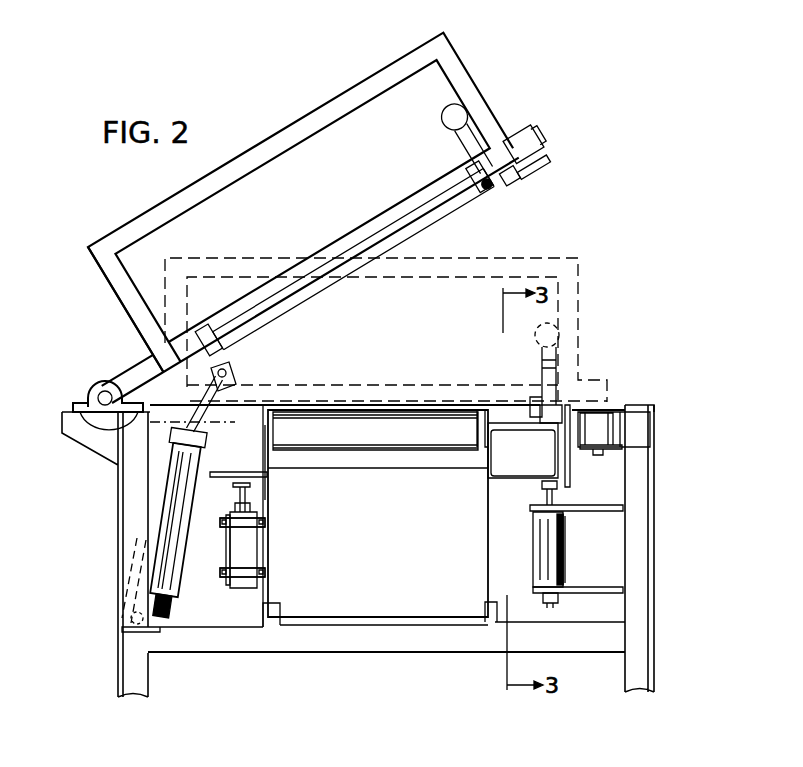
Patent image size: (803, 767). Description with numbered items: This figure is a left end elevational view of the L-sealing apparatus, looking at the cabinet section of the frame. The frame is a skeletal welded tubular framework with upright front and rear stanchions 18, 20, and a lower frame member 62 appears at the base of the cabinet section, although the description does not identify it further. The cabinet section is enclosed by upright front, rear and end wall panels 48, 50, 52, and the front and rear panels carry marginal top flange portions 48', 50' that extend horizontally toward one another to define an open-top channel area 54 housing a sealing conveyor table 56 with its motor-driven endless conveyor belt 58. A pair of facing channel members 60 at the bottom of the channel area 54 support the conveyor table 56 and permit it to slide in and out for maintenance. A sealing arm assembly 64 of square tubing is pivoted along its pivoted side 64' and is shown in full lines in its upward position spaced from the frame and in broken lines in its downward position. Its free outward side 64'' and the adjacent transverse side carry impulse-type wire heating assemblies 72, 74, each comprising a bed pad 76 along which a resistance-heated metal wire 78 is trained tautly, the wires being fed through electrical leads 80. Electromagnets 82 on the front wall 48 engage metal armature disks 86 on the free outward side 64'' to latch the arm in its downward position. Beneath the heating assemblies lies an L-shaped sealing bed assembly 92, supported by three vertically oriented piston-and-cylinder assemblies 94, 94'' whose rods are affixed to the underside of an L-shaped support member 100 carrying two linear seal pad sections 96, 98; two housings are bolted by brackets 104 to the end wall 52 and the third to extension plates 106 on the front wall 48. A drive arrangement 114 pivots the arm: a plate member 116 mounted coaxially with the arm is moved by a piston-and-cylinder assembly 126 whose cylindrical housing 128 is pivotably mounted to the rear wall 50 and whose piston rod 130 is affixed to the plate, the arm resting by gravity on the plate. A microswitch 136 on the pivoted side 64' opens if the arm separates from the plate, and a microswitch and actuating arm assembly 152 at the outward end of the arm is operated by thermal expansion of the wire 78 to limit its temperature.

The front stanchion 18 is at (647, 652).
The rear stanchion 20 is at (130, 668).
The front wall panel 48 is at (670, 513).
The front marginal top flange portion 48' is at (654, 390).
The rear wall panel 50 is at (106, 519).
The rear marginal top flange portion 50' is at (83, 405).
The end wall panel 52 is at (213, 580).
The open-top channel area 54 is at (197, 630).
The sealing conveyor table 56 is at (393, 572).
The endless conveyor belt 58 is at (357, 438).
The channel member 60 is at (270, 628).
The bottom beam 62 is at (385, 652).
The sealing arm assembly 64 is at (287, 218).
The pivoted side of sealing arm 64' is at (124, 309).
The free outward side of sealing arm 64'' is at (538, 133).
The wire heating assembly 72 is at (488, 188).
The wire heating assembly 74 is at (435, 226).
The bed pad 76 is at (525, 183).
The resistance-heated metal wire 78 is at (338, 288).
The electrical lead 80 is at (480, 190).
The electromagnet 82 is at (605, 432).
The metal armature disk 86 is at (548, 170).
The L-shaped sealing bed assembly 92 is at (570, 495).
The piston-and-cylinder assembly 94 is at (455, 545).
The piston-and-cylinder assembly 94'' is at (398, 567).
The linear seal pad section 96 is at (540, 412).
The linear seal pad section 98 is at (503, 405).
The L-shaped support member 100 is at (553, 458).
The bracket 104 is at (263, 515).
The extension plate 106 is at (600, 512).
The drive arrangement 114 is at (149, 470).
The plate member 116 is at (233, 388).
The piston-and-cylinder assembly 126 is at (150, 572).
The cylindrical housing 128 is at (115, 550).
The piston rod 130 is at (262, 478).
The microswitch 136 is at (168, 340).
The microswitch and actuating arm assembly 152 is at (457, 155).